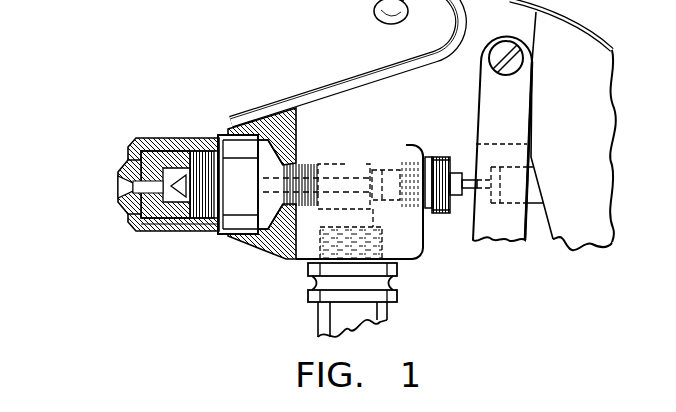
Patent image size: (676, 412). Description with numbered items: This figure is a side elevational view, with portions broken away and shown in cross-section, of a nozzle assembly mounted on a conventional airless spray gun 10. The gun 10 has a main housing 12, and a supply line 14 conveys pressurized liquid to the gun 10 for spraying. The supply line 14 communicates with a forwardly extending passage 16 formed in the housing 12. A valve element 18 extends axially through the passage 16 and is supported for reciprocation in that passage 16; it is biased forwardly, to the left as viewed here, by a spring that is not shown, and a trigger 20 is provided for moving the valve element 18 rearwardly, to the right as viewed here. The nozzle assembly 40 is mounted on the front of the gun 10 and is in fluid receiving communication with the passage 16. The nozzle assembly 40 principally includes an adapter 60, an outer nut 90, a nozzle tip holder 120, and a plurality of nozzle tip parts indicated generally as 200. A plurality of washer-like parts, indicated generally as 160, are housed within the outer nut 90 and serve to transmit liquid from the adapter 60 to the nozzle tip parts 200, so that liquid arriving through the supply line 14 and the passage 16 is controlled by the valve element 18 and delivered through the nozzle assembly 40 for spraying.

The airless spray gun 10 is at (326, 61).
The main housing 12 is at (306, 96).
The supply line 14 is at (327, 313).
The forwardly extending passage 16 is at (347, 163).
The valve element 18 is at (357, 170).
The trigger 20 is at (484, 227).
The nozzle assembly 40 is at (181, 124).
The adapter 60 is at (239, 141).
The outer nut 90 is at (155, 129).
The nozzle tip holder 120 is at (120, 167).
The washer-like parts 160 is at (147, 233).
The nozzle tip parts 200 is at (111, 191).